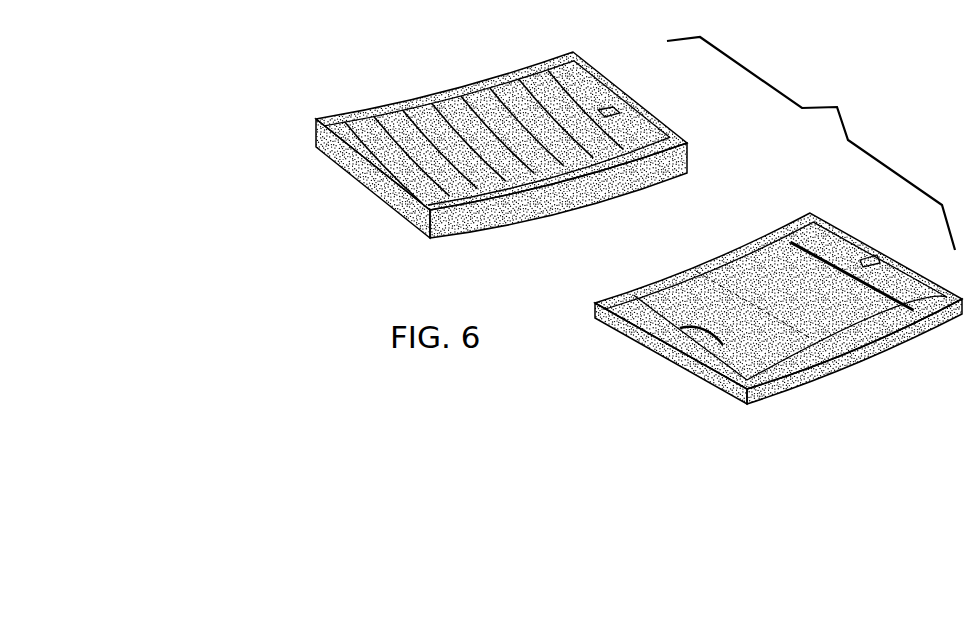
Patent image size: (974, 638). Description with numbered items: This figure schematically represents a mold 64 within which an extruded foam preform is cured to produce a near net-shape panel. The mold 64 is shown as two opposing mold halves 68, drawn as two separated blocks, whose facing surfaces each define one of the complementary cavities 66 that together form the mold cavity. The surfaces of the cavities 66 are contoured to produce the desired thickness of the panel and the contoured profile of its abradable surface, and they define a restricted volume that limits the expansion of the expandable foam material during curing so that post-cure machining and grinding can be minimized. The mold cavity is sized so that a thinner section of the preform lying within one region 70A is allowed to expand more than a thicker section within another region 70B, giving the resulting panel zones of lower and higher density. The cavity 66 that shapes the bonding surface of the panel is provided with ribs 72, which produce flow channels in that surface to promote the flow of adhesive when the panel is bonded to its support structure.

The mold 64 is at (811, 143).
The complementary cavities 66 is at (427, 167).
The mold halves 68 is at (583, 82).
The region of the mold cavity 70A is at (680, 328).
The region of the mold cavity 70B is at (813, 277).
The ribs 72 is at (523, 88).